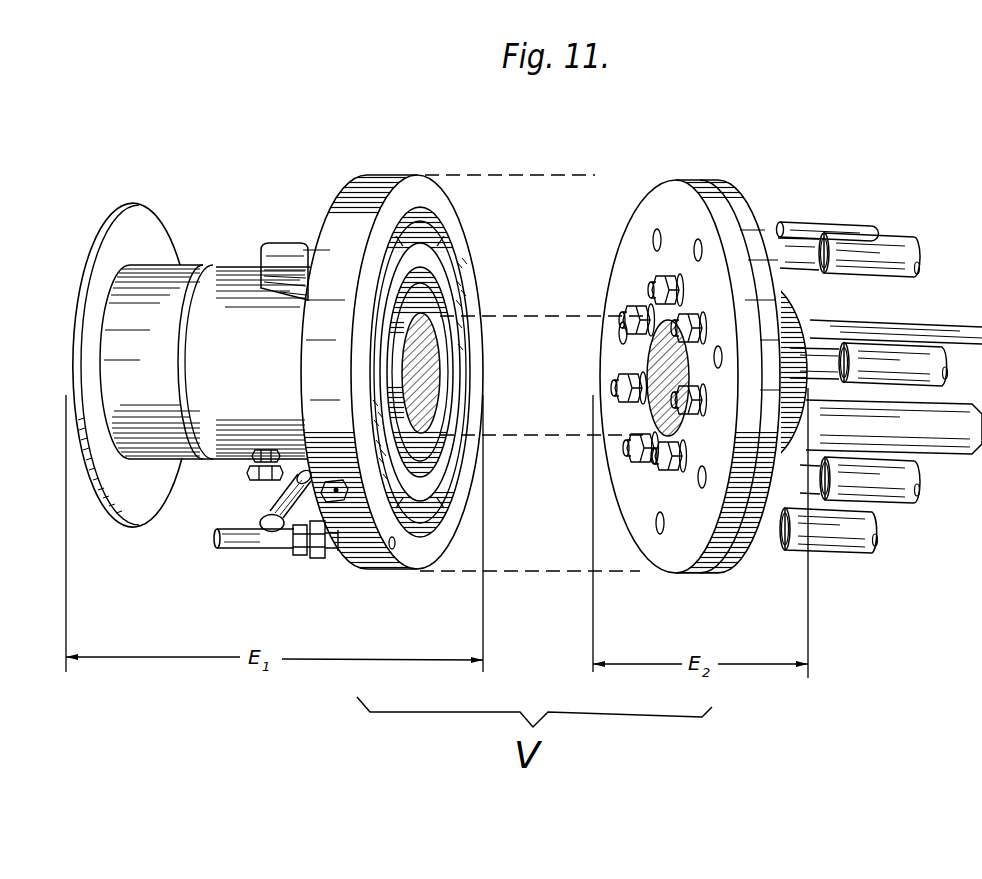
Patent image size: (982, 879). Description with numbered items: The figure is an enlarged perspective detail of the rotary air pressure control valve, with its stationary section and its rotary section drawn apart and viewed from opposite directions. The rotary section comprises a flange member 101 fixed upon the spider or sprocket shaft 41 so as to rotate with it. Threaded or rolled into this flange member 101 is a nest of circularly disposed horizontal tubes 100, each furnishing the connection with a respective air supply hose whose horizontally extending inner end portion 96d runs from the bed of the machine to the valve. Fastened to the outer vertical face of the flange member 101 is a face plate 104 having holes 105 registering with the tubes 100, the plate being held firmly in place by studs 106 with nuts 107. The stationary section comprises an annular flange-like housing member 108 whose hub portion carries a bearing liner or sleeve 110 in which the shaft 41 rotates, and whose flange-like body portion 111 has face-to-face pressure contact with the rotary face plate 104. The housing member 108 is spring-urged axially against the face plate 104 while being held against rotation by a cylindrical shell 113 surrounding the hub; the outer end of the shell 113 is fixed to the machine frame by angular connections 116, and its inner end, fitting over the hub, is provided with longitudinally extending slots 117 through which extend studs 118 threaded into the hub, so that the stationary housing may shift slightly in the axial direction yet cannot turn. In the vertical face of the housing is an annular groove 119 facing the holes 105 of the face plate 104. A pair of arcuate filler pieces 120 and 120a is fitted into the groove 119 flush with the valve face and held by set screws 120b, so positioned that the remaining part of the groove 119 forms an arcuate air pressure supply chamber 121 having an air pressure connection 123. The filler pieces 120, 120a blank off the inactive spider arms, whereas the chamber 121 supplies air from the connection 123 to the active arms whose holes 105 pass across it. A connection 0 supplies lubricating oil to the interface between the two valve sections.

The annular flange-like housing member 108 is at (390, 168).
The arcuate air pressure supply chamber 121 is at (405, 232).
The angular connections 116 is at (153, 227).
The cylindrical shell 113 is at (240, 267).
The air pressure connection 123 is at (287, 243).
The bearing liner or sleeve 110 is at (420, 312).
The arcuate filler piece 120a is at (463, 282).
The spider shaft (sprocket shaft) 41 is at (428, 396).
The arcuate filler piece 120 is at (375, 440).
The studs 118 is at (255, 477).
The longitudinally extending slots 117 is at (296, 458).
The lubricating oil connection 0 is at (262, 552).
The set screws 120b is at (293, 534).
The flange-like body portion 111 is at (391, 572).
The annular groove 119 is at (444, 512).
The face plate 104 is at (617, 523).
The flange member 101 is at (745, 577).
The studs 106 is at (648, 289).
The nuts 107 is at (660, 278).
The holes 105 is at (683, 489).
The horizontal tube 100 is at (817, 345).
The horizontally extending inner end portion of hose member 96d is at (905, 505).